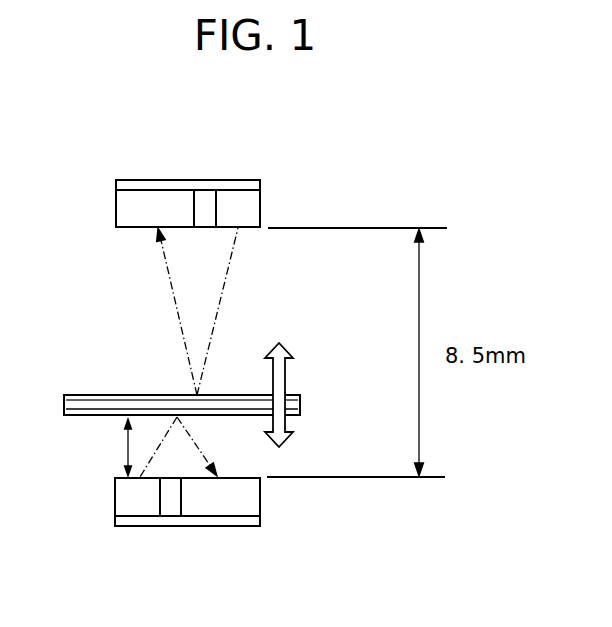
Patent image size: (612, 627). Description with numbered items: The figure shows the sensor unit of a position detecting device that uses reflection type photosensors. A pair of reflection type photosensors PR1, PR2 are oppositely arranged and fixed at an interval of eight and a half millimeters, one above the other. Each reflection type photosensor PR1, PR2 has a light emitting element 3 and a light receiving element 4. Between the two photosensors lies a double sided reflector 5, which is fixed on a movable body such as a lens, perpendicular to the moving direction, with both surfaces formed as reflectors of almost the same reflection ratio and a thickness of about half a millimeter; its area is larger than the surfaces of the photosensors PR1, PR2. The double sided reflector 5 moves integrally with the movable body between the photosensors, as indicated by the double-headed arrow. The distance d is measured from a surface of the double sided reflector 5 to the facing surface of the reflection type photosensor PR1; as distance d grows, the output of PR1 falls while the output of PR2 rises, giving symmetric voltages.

The light emitting element 3 is at (238, 200).
The light receiving element 4 is at (157, 200).
The double sided reflector 5 is at (92, 393).
The reflection type photosensor PR1 is at (262, 505).
The reflection type photosensor PR2 is at (262, 203).
The distance d is at (115, 447).